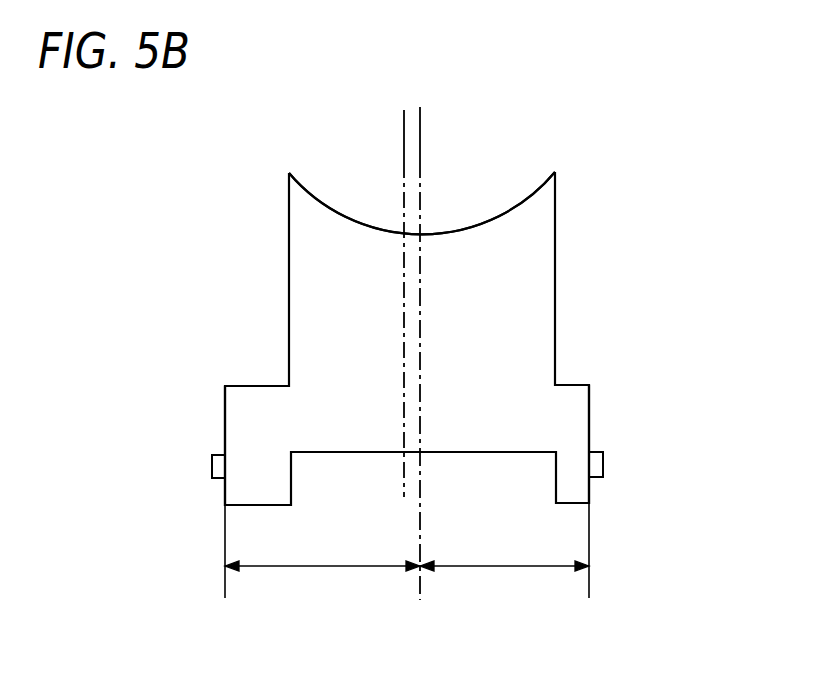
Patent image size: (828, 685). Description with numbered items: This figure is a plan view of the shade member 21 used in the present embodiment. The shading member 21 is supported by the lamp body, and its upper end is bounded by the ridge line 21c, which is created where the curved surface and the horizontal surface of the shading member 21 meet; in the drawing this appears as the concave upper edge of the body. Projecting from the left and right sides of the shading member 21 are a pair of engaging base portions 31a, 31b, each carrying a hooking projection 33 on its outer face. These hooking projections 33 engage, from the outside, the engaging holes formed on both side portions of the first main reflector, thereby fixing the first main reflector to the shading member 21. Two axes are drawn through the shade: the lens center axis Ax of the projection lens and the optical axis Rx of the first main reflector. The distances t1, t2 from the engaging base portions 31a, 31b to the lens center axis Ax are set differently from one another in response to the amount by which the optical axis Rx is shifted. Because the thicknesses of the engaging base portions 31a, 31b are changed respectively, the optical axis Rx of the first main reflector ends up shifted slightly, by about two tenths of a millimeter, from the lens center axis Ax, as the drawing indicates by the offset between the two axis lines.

The shading member 21 is at (555, 250).
The ridge line 21c is at (338, 213).
The hooking projections 33 is at (212, 463).
The engaging base portion 31a is at (220, 501).
The engaging base portion 31b is at (597, 488).
The optical axis Rx is at (404, 190).
The lens center axis Ax is at (420, 150).
The distance t1 is at (504, 550).
The distance t2 is at (322, 551).